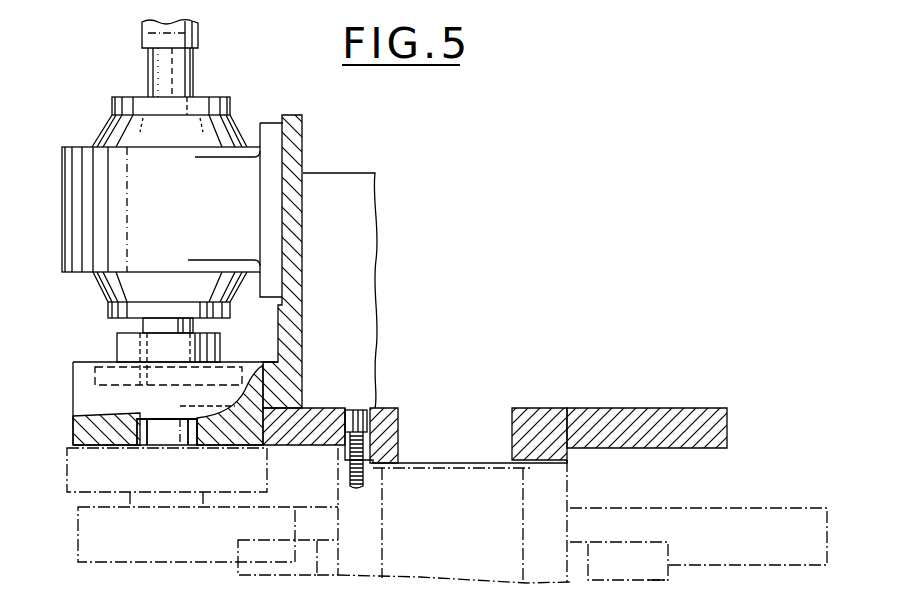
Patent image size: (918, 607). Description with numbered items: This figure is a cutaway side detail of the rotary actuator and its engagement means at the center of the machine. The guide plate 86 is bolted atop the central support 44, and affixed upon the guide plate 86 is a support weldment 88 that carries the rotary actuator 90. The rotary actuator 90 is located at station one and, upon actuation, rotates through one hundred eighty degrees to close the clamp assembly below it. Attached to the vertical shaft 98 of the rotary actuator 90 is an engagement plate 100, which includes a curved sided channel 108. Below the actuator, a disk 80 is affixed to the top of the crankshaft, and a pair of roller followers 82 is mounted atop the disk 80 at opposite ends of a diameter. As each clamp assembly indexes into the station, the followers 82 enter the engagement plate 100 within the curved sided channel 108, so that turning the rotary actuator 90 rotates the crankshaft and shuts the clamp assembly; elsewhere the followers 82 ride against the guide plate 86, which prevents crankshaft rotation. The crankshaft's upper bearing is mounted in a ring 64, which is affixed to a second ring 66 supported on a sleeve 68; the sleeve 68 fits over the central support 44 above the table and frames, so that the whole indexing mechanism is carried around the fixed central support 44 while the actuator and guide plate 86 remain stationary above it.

The central support 44 is at (560, 487).
The ring 64 is at (742, 532).
The second ring 66 is at (648, 573).
The sleeve 68 is at (580, 548).
The disk 80 is at (67, 482).
The roller followers 82 is at (163, 442).
The guide plate 86 is at (673, 407).
The support weldment 88 is at (303, 153).
The rotary actuator 90 is at (222, 97).
The vertical shaft 98 is at (143, 327).
The engagement plate 100 is at (73, 384).
The curved sided channel 108 is at (73, 433).